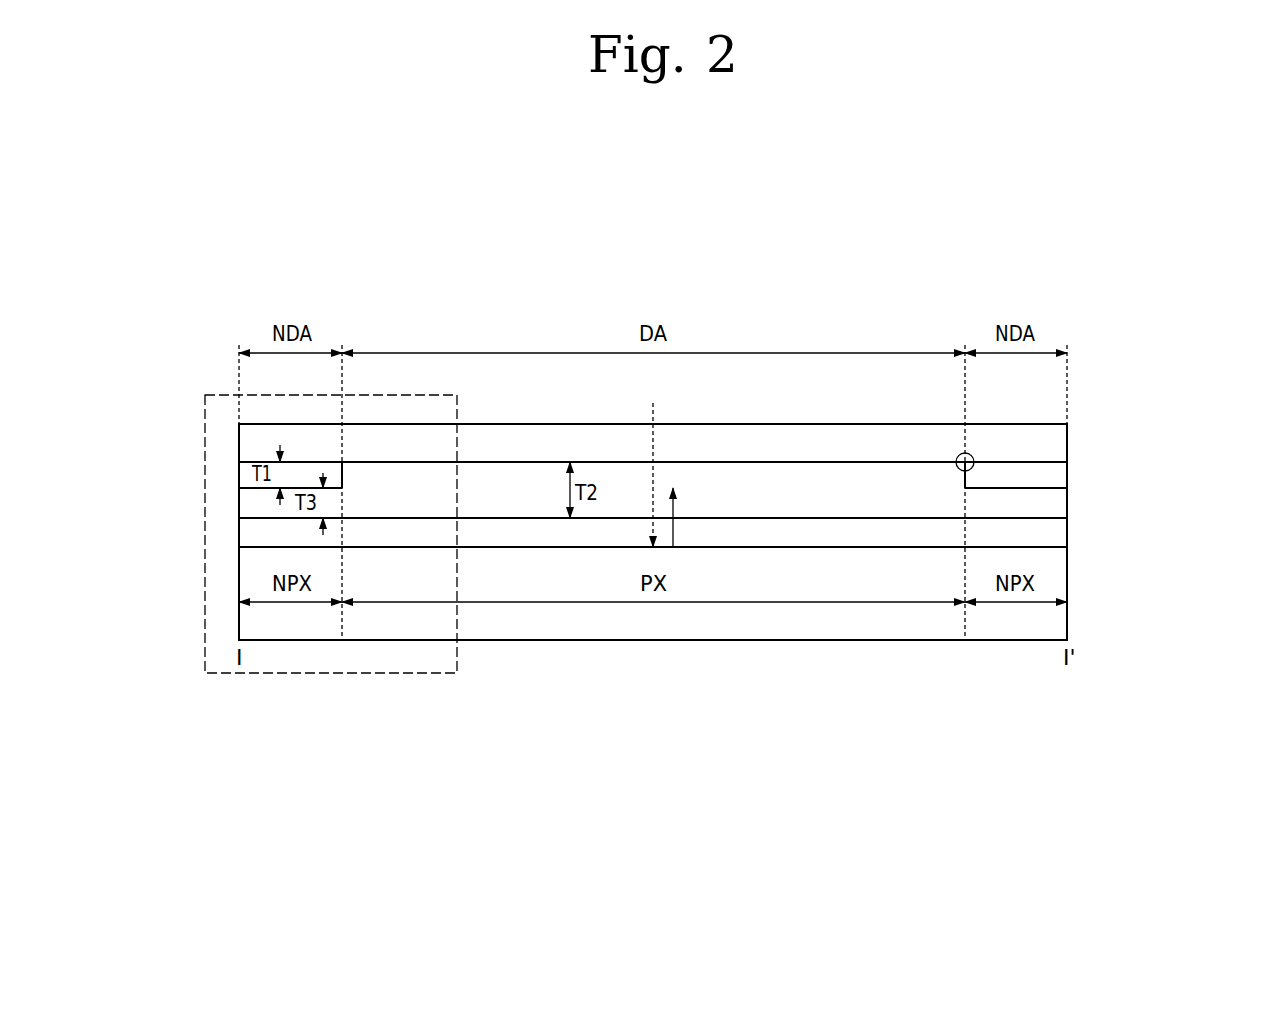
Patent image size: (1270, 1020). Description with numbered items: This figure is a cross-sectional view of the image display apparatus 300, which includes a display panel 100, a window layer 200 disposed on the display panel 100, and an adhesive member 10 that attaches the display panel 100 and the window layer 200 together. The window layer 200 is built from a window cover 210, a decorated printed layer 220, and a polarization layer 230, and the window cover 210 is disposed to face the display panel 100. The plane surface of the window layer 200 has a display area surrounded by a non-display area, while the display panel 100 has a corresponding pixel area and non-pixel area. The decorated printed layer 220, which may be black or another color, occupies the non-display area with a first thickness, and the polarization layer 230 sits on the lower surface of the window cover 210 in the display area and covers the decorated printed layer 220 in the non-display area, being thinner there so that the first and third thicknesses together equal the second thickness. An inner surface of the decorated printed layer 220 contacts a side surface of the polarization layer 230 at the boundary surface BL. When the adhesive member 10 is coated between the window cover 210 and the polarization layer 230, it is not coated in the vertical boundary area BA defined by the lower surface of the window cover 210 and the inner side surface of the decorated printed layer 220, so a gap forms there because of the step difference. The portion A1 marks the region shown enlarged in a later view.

The image display apparatus 300 is at (1076, 282).
The display panel 100 is at (1060, 579).
The adhesive member 10 is at (1060, 531).
The window layer 200 is at (1149, 436).
The window cover 210 is at (1060, 446).
The decorated printed layer 220 is at (1060, 474).
The polarization layer 230 is at (1060, 506).
The boundary surface BL is at (346, 471).
The vertical boundary area BA is at (958, 458).
The portion A1 is at (205, 523).